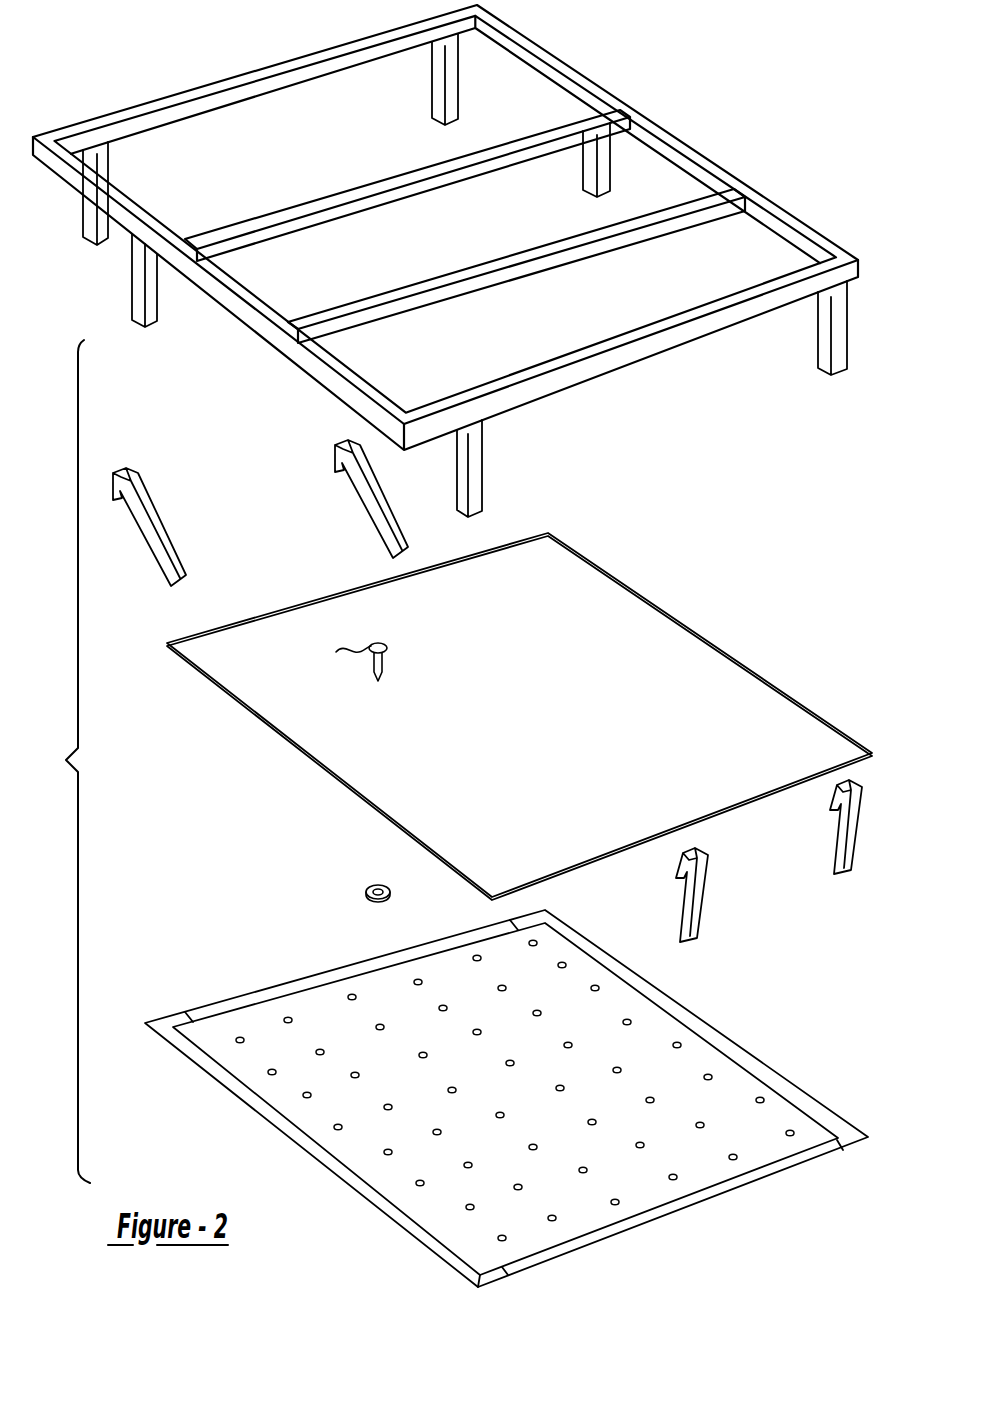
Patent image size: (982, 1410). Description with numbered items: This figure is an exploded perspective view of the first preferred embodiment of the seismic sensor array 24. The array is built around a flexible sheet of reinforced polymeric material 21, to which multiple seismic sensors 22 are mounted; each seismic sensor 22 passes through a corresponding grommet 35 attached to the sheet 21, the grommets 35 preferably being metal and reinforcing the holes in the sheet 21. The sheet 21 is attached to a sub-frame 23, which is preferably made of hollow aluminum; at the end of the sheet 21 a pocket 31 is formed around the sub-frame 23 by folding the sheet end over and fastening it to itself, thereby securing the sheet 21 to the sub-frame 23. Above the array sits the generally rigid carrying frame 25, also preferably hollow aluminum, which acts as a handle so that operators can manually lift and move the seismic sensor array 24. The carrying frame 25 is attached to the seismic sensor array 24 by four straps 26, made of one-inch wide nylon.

The flexible sheet of reinforced polymeric material 21 is at (318, 1117).
The seismic sensor 22 is at (385, 664).
The sub-frame 23 is at (330, 772).
The seismic sensor array 24 is at (63, 761).
The carrying frame 25 is at (667, 130).
The strap 26 is at (703, 892).
The pocket 31 is at (416, 1238).
The grommet 35 is at (368, 887).